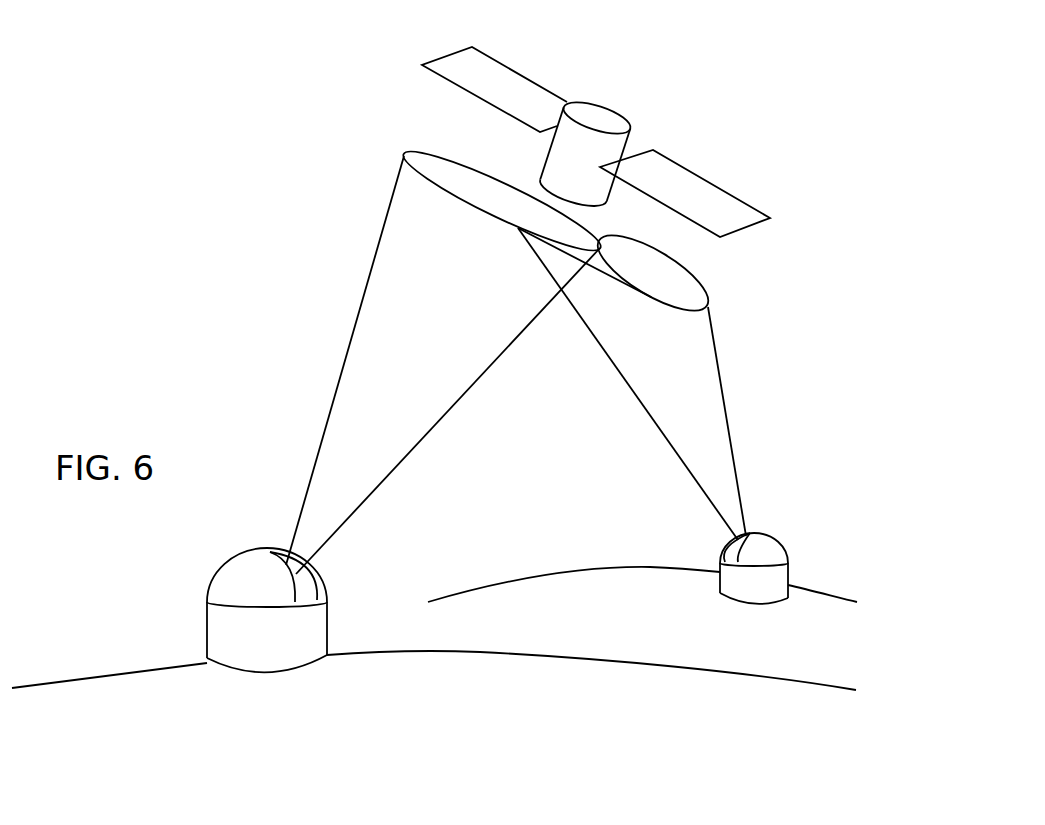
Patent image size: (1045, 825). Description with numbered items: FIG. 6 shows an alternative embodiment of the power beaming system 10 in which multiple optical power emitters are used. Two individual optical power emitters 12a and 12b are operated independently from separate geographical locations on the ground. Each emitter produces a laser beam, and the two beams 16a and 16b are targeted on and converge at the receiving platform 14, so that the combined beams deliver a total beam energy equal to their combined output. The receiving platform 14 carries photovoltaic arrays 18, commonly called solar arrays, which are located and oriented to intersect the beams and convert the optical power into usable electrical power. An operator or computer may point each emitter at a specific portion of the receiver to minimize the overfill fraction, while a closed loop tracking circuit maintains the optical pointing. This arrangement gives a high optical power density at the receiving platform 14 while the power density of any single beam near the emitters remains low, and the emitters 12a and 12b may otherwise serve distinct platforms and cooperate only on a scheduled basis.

The satellite communication system 10 is at (190, 251).
The optical power emitter 12a is at (230, 561).
The optical power emitter 12b is at (768, 534).
The receiving platform 14 is at (712, 101).
The beam 16a is at (327, 410).
The beam 16b is at (727, 413).
The photovoltaic array 18 is at (733, 193).